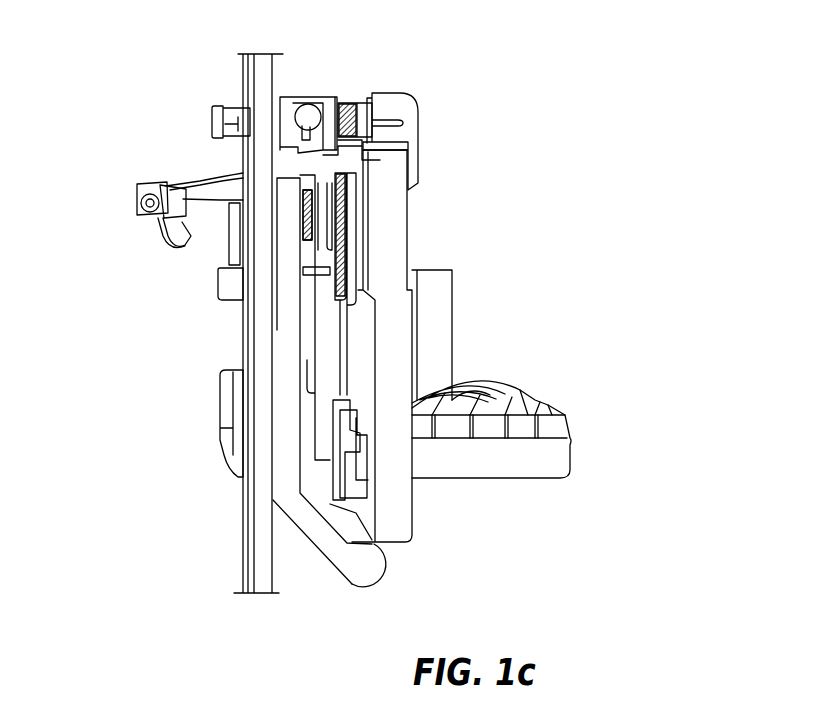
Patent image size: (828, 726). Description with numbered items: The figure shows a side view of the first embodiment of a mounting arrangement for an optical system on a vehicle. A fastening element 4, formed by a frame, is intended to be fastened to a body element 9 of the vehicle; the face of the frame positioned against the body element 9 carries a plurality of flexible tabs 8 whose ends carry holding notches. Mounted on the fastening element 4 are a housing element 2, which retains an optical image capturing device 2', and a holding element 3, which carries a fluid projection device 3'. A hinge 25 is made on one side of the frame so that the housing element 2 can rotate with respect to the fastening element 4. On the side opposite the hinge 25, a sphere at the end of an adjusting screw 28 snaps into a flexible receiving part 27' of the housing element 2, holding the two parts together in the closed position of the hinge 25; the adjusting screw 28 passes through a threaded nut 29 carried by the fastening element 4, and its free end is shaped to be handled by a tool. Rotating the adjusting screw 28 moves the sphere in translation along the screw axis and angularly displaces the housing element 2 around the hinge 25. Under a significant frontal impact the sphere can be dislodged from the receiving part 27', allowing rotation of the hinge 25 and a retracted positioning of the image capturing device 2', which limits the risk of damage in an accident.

The body element 9 is at (266, 72).
The holding element 3 is at (199, 181).
The fluid projection device 3' is at (121, 211).
The flexible tabs 8 is at (225, 262).
The fastening element 4 is at (315, 547).
The hinge 25 is at (366, 572).
The housing element 2 is at (425, 352).
The image capturing device 2' is at (531, 385).
The threaded nut 29 is at (297, 93).
The adjusting screw 28 is at (357, 103).
The receiving part 27' is at (441, 141).